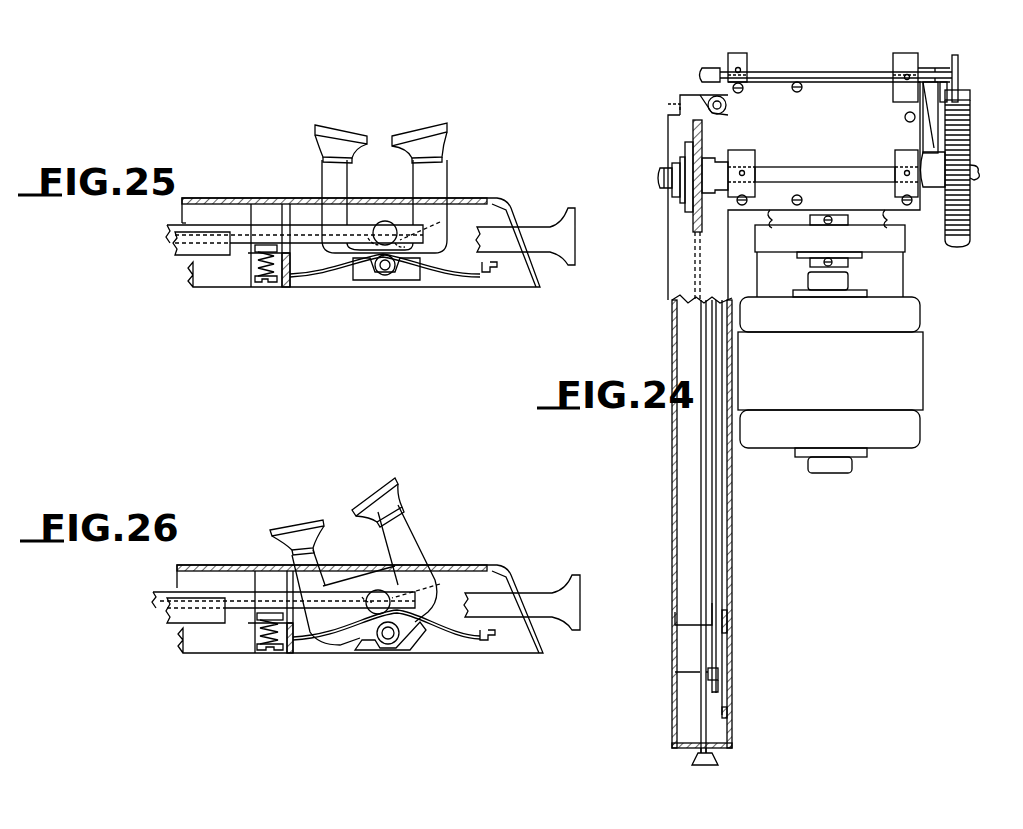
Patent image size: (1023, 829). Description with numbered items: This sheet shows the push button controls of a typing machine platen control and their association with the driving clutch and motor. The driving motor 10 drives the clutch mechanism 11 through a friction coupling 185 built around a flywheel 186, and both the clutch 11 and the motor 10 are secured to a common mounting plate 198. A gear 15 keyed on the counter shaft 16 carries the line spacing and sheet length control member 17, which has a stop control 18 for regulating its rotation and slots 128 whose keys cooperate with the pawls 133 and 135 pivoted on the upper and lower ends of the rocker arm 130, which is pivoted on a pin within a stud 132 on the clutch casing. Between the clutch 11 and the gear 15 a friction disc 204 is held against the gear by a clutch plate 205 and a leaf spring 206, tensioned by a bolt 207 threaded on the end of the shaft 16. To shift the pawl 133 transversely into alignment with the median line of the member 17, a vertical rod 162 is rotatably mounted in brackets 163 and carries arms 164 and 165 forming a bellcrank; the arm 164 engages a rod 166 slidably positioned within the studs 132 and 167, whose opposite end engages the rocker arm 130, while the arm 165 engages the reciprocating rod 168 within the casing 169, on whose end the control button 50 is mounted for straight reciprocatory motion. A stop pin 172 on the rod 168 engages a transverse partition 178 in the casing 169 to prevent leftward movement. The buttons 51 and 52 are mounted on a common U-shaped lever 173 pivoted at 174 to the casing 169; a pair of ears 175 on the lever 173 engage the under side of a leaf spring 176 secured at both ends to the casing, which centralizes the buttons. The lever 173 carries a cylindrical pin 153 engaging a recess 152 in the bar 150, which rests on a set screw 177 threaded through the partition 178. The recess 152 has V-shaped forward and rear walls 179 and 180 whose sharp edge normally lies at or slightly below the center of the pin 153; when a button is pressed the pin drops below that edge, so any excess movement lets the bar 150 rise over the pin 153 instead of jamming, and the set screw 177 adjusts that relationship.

In FIG. 24, the driving motor 10 is at (842, 378).
In FIG. 24, the clutch mechanism 11 is at (830, 136).
In FIG. 24, the gear 15 is at (693, 226).
In FIG. 24, the counter shaft 16 is at (852, 172).
In FIG. 24, the line spacing and sheet length control member 17 is at (970, 150).
In FIG. 24, the stop control 18 is at (952, 55).
In FIG. 25, the control actuating button 50 is at (575, 220).
In FIG. 26, the control actuating button 50 is at (578, 590).
In FIG. 24, the control actuating button 50 is at (720, 765).
In FIG. 25, the control button 51 is at (432, 122).
In FIG. 26, the control button 51 is at (375, 485).
In FIG. 25, the control button 52 is at (345, 122).
In FIG. 26, the control button 52 is at (305, 520).
In FIG. 24, the slots 128 is at (970, 213).
In FIG. 24, the rocker arm 130 is at (958, 60).
In FIG. 24, the stud 132 is at (908, 58).
In FIG. 24, the pawl 133 is at (966, 97).
In FIG. 24, the pawl 135 is at (960, 85).
In FIG. 25, the bar 150 is at (182, 216).
In FIG. 26, the bar 150 is at (168, 592).
In FIG. 24, the bar 150 is at (720, 530).
In FIG. 25, the recess 152 is at (400, 222).
In FIG. 26, the recess 152 is at (362, 599).
In FIG. 25, the cylindrical pin 153 is at (390, 222).
In FIG. 26, the cylindrical pin 153 is at (380, 590).
In FIG. 24, the cylindrical pin 153 is at (722, 670).
In FIG. 24, the rod 162 is at (728, 104).
In FIG. 24, the brackets 163 is at (728, 115).
In FIG. 24, the arm 164 is at (705, 85).
In FIG. 24, the arm 165 is at (668, 104).
In FIG. 24, the rod 166 is at (852, 62).
In FIG. 24, the stud 167 is at (748, 58).
In FIG. 24, the reciprocating rod 168 is at (702, 430).
In FIG. 25, the casing 169 is at (256, 198).
In FIG. 26, the casing 169 is at (240, 565).
In FIG. 24, the casing 169 is at (672, 285).
In FIG. 24, the stop pin 172 is at (700, 622).
In FIG. 25, the U-shaped lever 173 is at (432, 180).
In FIG. 26, the U-shaped lever 173 is at (410, 530).
In FIG. 24, the U-shaped lever 173 is at (730, 636).
In FIG. 25, the pivot 174 is at (386, 276).
In FIG. 26, the pivot 174 is at (390, 645).
In FIG. 25, the ears 175 is at (356, 282).
In FIG. 26, the ears 175 is at (362, 650).
In FIG. 25, the leaf spring 176 is at (308, 276).
In FIG. 26, the leaf spring 176 is at (330, 640).
In FIG. 25, the set screw 177 is at (262, 285).
In FIG. 26, the set screw 177 is at (273, 652).
In FIG. 25, the partition 178 is at (250, 260).
In FIG. 26, the partition 178 is at (252, 630).
In FIG. 24, the partition 178 is at (685, 630).
In FIG. 25, the V-shaped forward wall 179 is at (440, 222).
In FIG. 26, the V-shaped forward wall 179 is at (440, 584).
In FIG. 25, the V-shaped rear wall 180 is at (368, 238).
In FIG. 26, the V-shaped rear wall 180 is at (366, 610).
In FIG. 24, the friction coupling 185 is at (812, 222).
In FIG. 24, the flywheel 186 is at (878, 246).
In FIG. 24, the mounting plate 198 is at (903, 270).
In FIG. 24, the friction disc 204 is at (688, 140).
In FIG. 24, the clutch plate 205 is at (683, 153).
In FIG. 24, the leaf spring 206 is at (678, 165).
In FIG. 24, the bolt 207 is at (665, 188).